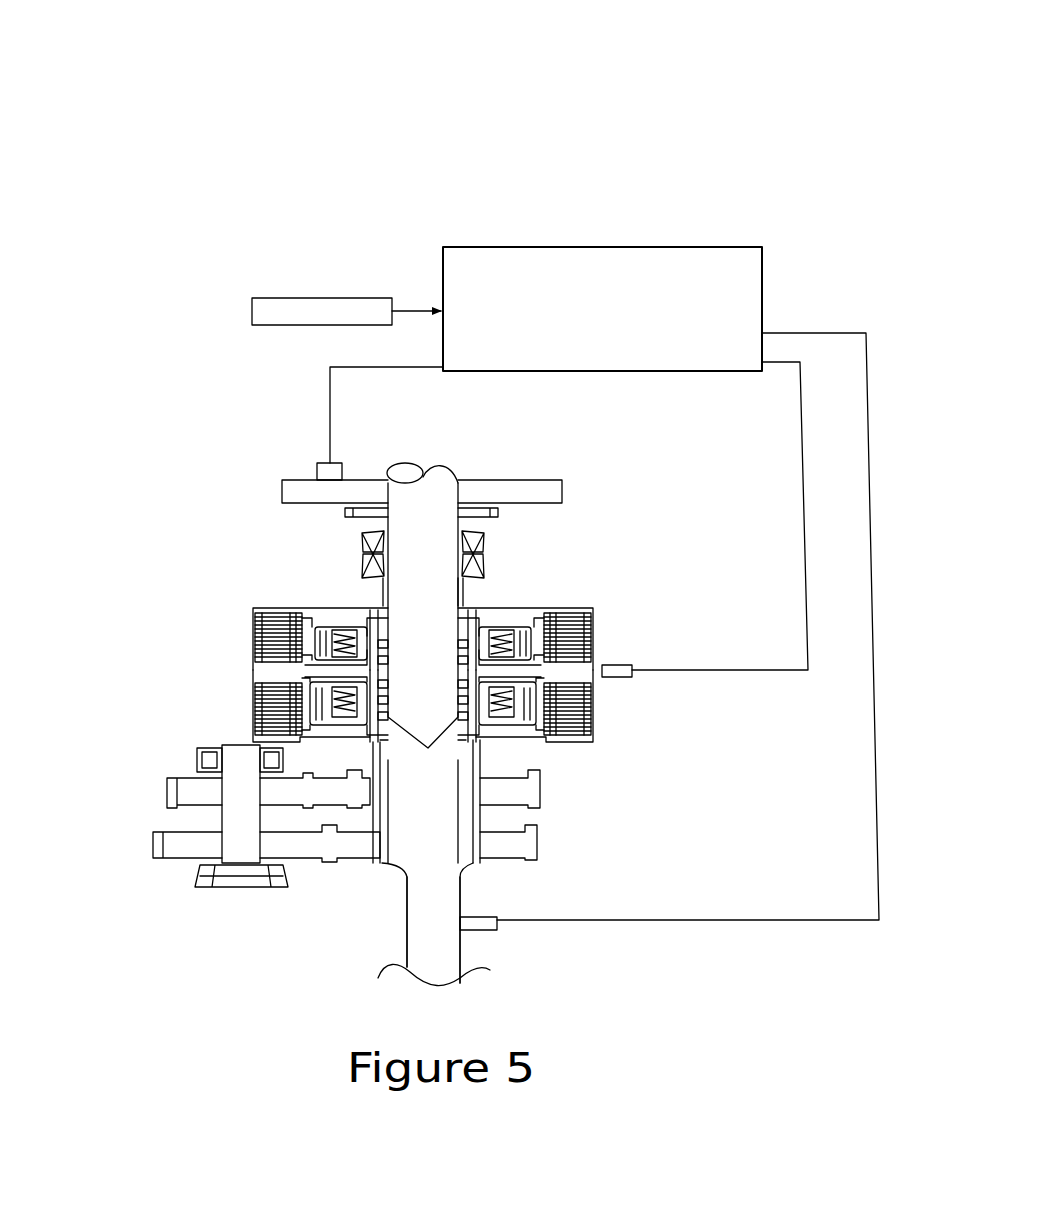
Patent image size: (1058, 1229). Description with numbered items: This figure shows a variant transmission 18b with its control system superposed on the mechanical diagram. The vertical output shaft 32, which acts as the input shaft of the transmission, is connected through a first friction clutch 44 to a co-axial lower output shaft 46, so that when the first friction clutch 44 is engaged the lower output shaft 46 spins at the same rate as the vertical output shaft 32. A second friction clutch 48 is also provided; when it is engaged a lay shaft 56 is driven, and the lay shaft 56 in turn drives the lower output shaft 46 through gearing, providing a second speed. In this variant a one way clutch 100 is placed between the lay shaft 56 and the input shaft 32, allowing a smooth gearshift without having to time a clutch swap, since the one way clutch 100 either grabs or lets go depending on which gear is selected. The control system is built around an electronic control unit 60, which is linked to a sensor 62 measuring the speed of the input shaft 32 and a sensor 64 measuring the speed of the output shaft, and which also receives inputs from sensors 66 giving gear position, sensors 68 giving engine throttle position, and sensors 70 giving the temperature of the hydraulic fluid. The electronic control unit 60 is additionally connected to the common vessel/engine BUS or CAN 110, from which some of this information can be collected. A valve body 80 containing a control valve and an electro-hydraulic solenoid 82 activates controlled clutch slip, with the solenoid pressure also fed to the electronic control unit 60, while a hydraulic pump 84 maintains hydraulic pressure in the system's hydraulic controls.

The transmission 18b is at (522, 126).
The electronic control unit 60 is at (732, 268).
The BUS or CAN 110 is at (318, 296).
The sensors 66 is at (495, 245).
The sensors 68 is at (675, 245).
The sensors 70 is at (764, 293).
The vertical output shaft 32 is at (446, 483).
The valve body 80 is at (280, 490).
The electro-hydraulic solenoid 82 is at (326, 460).
The hydraulic pump 84 is at (343, 514).
The first friction clutch 44 is at (271, 649).
The second friction clutch 48 is at (271, 711).
The sensor 62 is at (618, 684).
The lower output shaft 46 is at (422, 959).
The sensor 64 is at (483, 933).
The one way clutch 100 is at (205, 786).
The lay shaft 56 is at (218, 818).